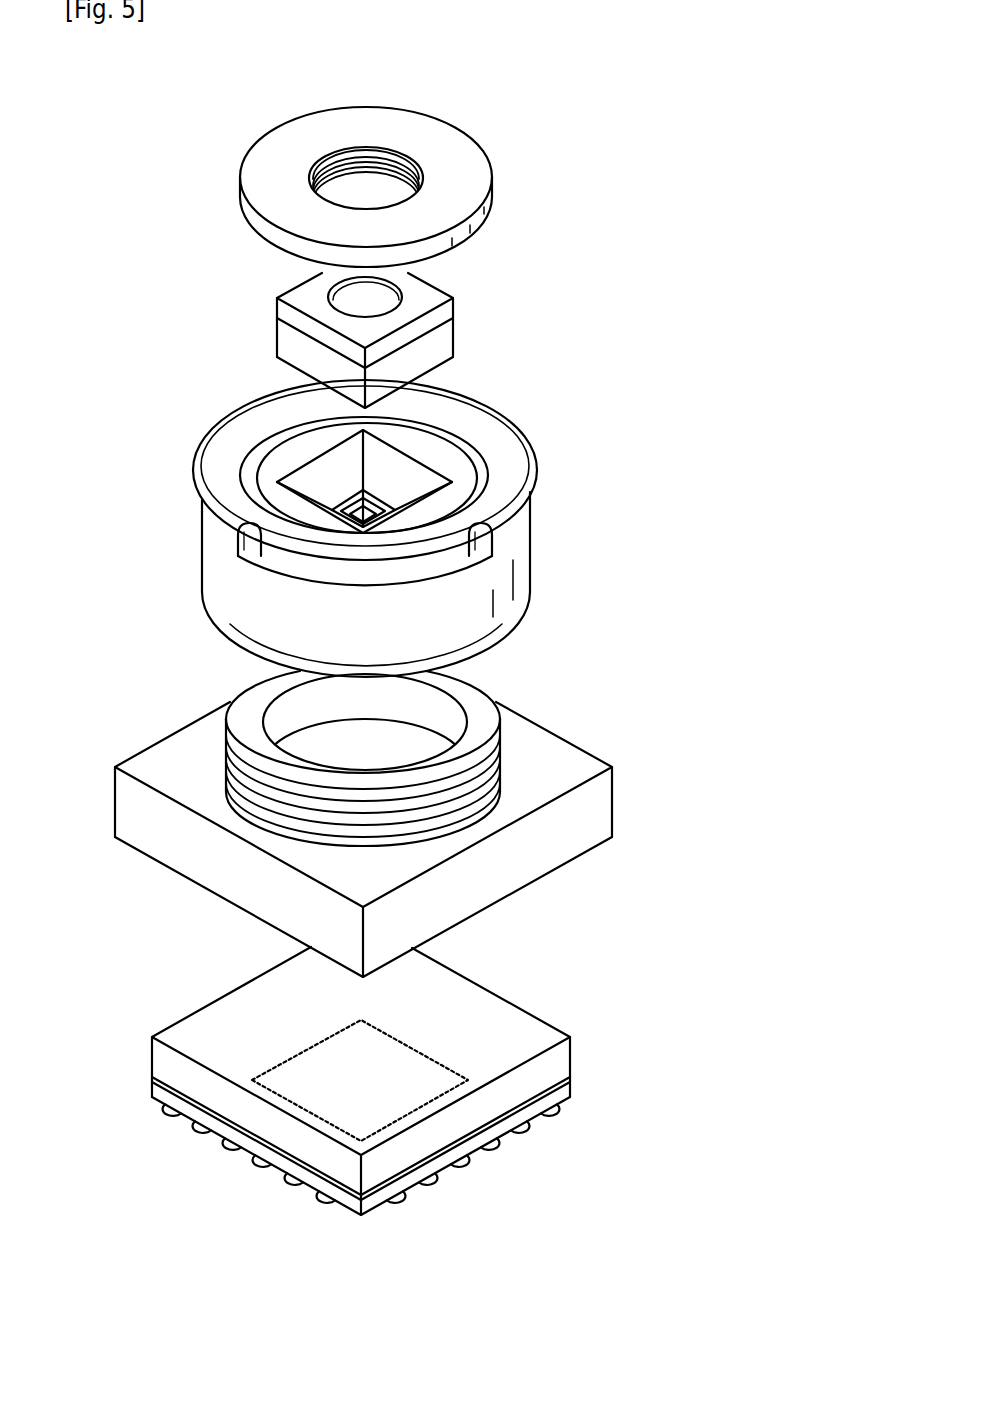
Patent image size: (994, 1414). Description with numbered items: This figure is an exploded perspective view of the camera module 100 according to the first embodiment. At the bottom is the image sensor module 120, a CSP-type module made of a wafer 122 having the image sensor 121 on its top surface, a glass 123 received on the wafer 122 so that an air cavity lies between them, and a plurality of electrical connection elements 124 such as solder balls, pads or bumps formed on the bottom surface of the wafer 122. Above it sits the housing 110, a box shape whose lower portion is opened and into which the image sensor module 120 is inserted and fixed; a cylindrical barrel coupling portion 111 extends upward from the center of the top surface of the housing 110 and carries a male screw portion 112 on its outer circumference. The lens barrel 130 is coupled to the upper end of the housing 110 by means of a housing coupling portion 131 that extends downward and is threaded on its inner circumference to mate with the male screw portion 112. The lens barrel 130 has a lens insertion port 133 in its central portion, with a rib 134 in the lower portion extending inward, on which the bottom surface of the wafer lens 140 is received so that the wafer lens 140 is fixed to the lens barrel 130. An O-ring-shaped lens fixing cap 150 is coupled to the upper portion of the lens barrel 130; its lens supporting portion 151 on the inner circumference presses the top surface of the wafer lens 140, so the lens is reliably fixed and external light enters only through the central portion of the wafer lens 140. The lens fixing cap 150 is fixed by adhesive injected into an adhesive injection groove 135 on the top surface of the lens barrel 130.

The camera module 100 is at (676, 355).
The housing 110 is at (396, 803).
The barrel coupling portion 111 is at (482, 698).
The male screw portion 112 is at (505, 765).
The image sensor module 120 is at (347, 1084).
The image sensor 121 is at (352, 1082).
The wafer 122 is at (492, 1130).
The glass 123 is at (507, 1013).
The electrical connection elements 124 is at (427, 1182).
The lens barrel 130 is at (379, 502).
The housing coupling portion 131 is at (518, 585).
The lens insertion port 133 is at (407, 480).
The rib 134 is at (307, 480).
The adhesive injection groove 135 is at (243, 482).
The wafer lens 140 is at (445, 333).
The lens fixing cap 150 is at (392, 172).
The lens supporting portion 151 is at (312, 162).